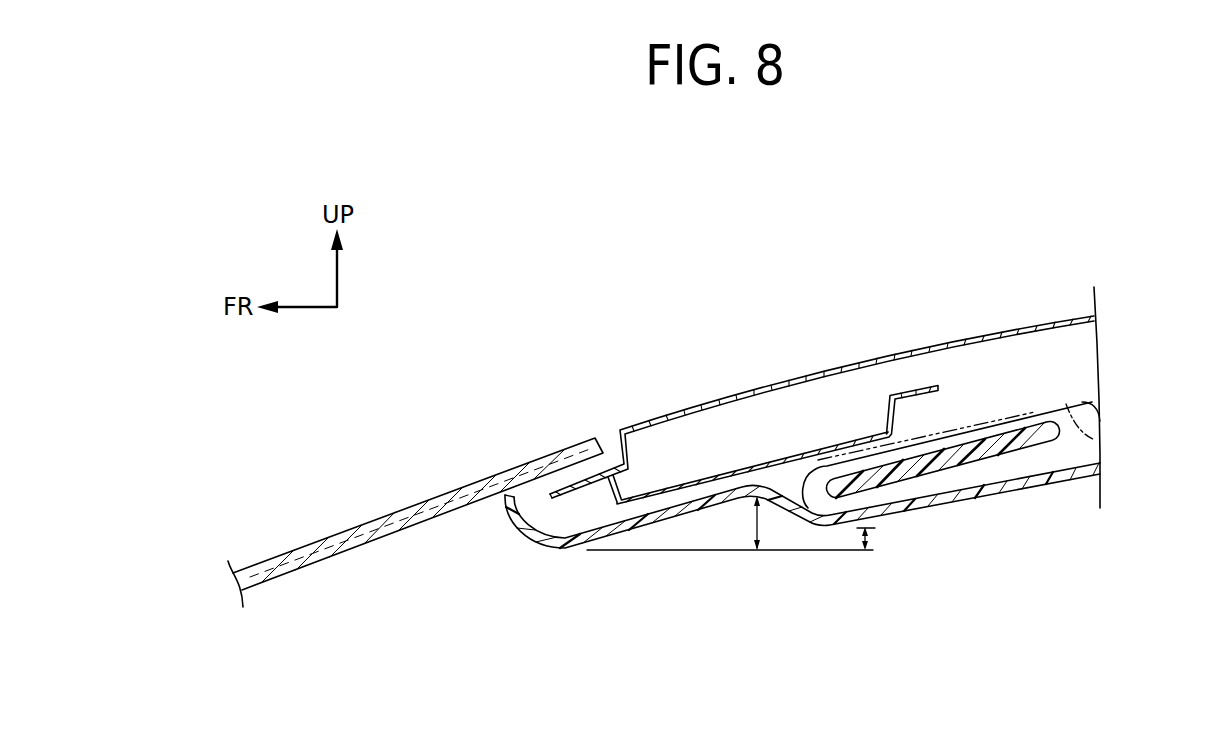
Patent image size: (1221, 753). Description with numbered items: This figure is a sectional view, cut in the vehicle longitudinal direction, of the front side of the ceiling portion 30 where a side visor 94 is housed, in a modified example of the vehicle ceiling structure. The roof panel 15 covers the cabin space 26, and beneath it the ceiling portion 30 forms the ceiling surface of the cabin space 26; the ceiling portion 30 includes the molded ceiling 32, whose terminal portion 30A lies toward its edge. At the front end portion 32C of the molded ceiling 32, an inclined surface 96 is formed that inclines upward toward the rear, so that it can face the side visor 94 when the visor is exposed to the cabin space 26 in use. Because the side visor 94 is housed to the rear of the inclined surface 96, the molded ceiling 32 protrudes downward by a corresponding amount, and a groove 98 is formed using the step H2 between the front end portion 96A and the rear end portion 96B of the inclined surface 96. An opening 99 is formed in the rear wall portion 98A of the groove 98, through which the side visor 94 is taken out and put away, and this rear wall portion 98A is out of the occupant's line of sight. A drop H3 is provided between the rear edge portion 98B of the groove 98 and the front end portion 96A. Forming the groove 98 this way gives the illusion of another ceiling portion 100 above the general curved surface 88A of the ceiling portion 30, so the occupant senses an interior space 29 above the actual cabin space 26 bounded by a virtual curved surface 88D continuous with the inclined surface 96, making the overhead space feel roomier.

The roof panel 15 is at (886, 351).
The cabin space 26 is at (1005, 682).
The interior space 29 is at (1035, 411).
The ceiling portion 30 is at (664, 527).
The terminal portion 30A is at (498, 492).
The molded ceiling 32 is at (778, 527).
The front end portion 32C is at (503, 504).
The curved surface 88A is at (987, 491).
The virtual curved surface 88D is at (1095, 440).
The side visor 94 is at (944, 466).
The inclined surface 96 is at (689, 520).
The front end portion 96A is at (581, 551).
The rear end portion 96B is at (774, 484).
The groove 98 is at (768, 504).
The rear wall portion 98A is at (786, 510).
The rear edge portion 98B is at (830, 521).
The opening 99 is at (810, 500).
The ceiling portion 100 is at (1100, 418).
The step H2 is at (754, 527).
The drop H3 is at (875, 537).